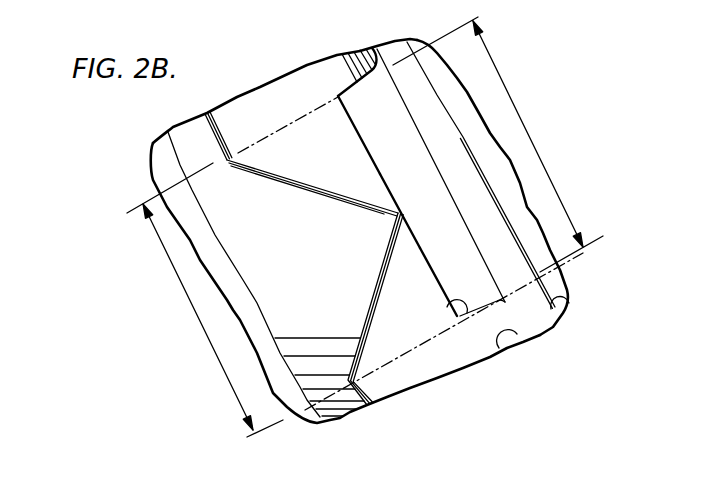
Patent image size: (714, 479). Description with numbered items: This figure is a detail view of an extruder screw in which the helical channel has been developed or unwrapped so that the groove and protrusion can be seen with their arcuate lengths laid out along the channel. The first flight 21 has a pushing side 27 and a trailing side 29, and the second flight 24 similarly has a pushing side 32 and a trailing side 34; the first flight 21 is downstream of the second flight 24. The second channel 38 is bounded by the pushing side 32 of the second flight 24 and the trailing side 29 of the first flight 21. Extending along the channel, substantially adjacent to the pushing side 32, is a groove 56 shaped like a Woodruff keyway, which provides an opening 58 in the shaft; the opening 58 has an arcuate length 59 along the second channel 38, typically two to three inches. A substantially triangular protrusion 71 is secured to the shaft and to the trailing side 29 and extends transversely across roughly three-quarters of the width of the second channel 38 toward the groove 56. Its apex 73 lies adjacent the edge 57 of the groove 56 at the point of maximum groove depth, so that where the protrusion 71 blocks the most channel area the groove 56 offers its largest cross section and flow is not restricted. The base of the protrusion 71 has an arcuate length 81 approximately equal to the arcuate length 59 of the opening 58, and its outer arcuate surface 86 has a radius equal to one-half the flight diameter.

The first flight 21 is at (352, 411).
The second flight 24 is at (538, 320).
The pushing side 27 is at (172, 148).
The trailing side 29 is at (215, 130).
The pushing side 32 is at (507, 350).
The trailing side 34 is at (569, 303).
The second channel 38 is at (305, 70).
The groove 56 is at (372, 133).
The edge 57 is at (375, 170).
The opening 58 is at (447, 306).
The arcuate length 59 is at (528, 133).
The protrusion 71 is at (328, 259).
The apex 73 is at (398, 213).
The arcuate length 81 is at (197, 318).
The arcuate surface 86 is at (283, 200).